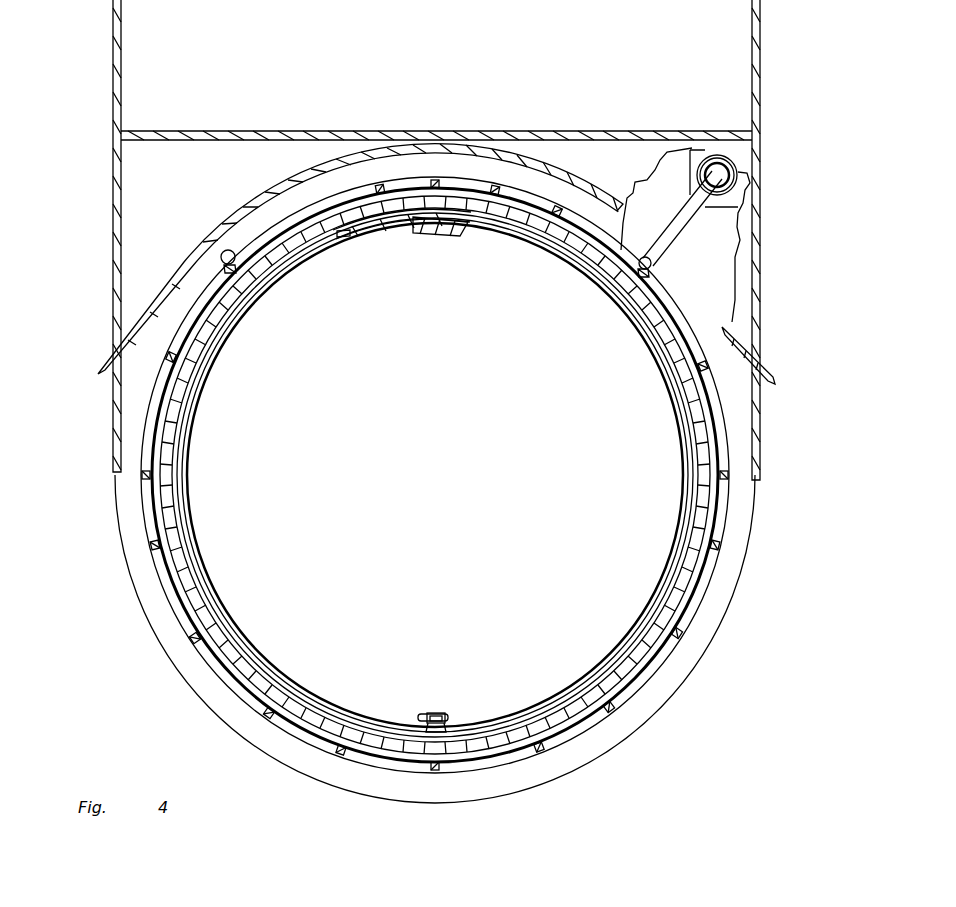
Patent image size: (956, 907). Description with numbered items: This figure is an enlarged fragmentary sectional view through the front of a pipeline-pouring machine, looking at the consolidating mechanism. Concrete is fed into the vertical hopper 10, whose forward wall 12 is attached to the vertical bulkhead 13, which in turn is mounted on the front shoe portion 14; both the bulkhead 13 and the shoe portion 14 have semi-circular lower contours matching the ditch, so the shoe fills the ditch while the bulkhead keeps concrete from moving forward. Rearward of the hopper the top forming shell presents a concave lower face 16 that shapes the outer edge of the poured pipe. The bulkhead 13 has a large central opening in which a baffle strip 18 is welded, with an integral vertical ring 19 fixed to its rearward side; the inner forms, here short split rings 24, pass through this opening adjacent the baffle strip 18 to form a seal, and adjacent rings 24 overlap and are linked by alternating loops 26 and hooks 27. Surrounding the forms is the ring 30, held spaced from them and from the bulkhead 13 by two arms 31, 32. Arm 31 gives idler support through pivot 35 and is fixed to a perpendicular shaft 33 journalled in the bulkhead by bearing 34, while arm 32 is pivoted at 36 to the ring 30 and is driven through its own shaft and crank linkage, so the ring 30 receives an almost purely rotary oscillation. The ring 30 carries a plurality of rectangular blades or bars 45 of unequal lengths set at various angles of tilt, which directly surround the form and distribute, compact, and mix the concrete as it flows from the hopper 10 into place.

The vertical hopper 10 is at (760, 50).
The forward wall 12 is at (506, 33).
The vertical bulkhead 13 is at (714, 309).
The front shoe portion 14 is at (735, 605).
The concave lower face 16 is at (138, 342).
The baffle strip 18 is at (190, 420).
The vertical ring 19 is at (203, 328).
The split rings 24 is at (366, 238).
The loops 26 is at (446, 716).
The hooks 27 is at (430, 713).
The ring 30 is at (168, 590).
The arm 31 is at (683, 240).
The arm 32 is at (221, 255).
The perpendicular shaft 33 is at (702, 178).
The bearing 34 is at (690, 163).
The pivot 35 is at (645, 257).
The pivot 36 is at (233, 256).
The rectangular blades or bars 45 is at (205, 633).